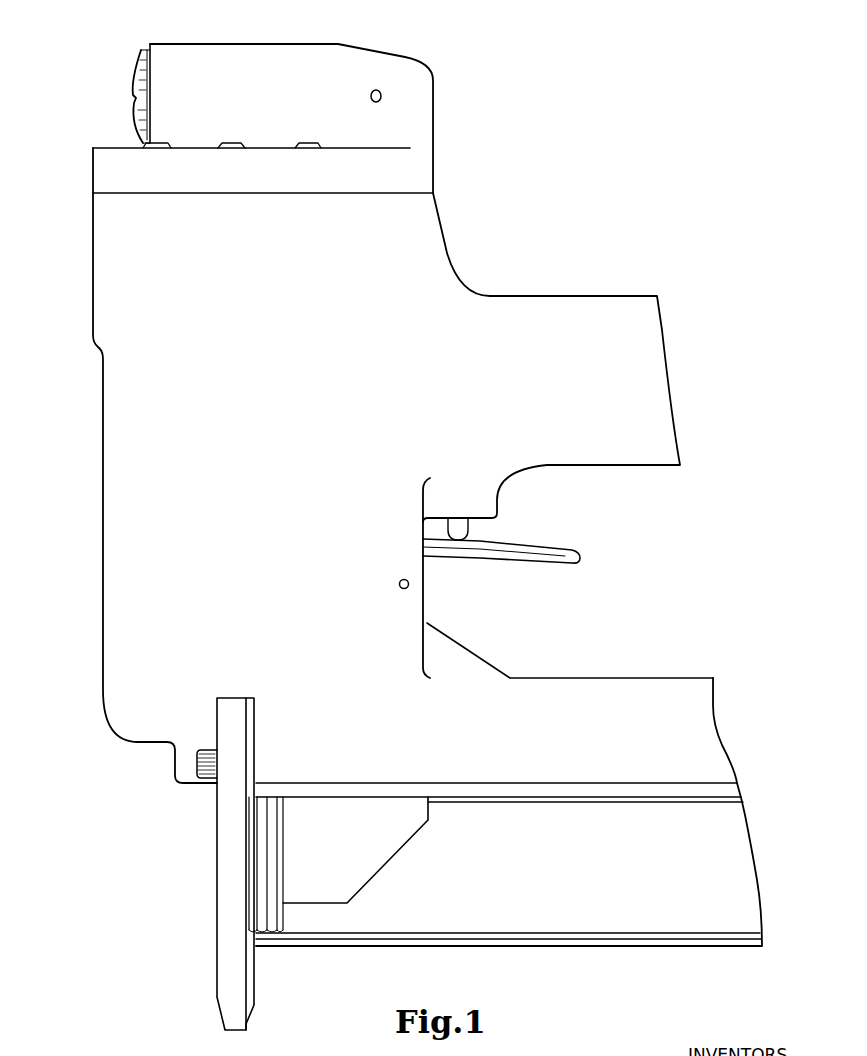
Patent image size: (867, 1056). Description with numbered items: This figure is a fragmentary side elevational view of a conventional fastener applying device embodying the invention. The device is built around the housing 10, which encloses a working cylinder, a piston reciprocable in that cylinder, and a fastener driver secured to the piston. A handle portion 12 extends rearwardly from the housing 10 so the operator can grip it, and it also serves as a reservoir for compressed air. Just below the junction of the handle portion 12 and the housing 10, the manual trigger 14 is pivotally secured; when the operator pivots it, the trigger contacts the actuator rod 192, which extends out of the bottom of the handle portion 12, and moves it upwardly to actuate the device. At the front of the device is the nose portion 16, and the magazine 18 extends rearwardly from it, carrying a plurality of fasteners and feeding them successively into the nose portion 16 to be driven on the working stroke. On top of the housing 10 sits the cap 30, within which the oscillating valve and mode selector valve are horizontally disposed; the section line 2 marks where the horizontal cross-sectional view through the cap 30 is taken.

The section line 2— 2 is at (58, 95).
The housing 10 is at (212, 420).
The handle portion 12 is at (582, 377).
The manual trigger 14 is at (542, 562).
The nose portion 16 is at (218, 873).
The magazine 18 is at (505, 812).
The cap 30 is at (225, 47).
The actuator rod 192 is at (468, 528).